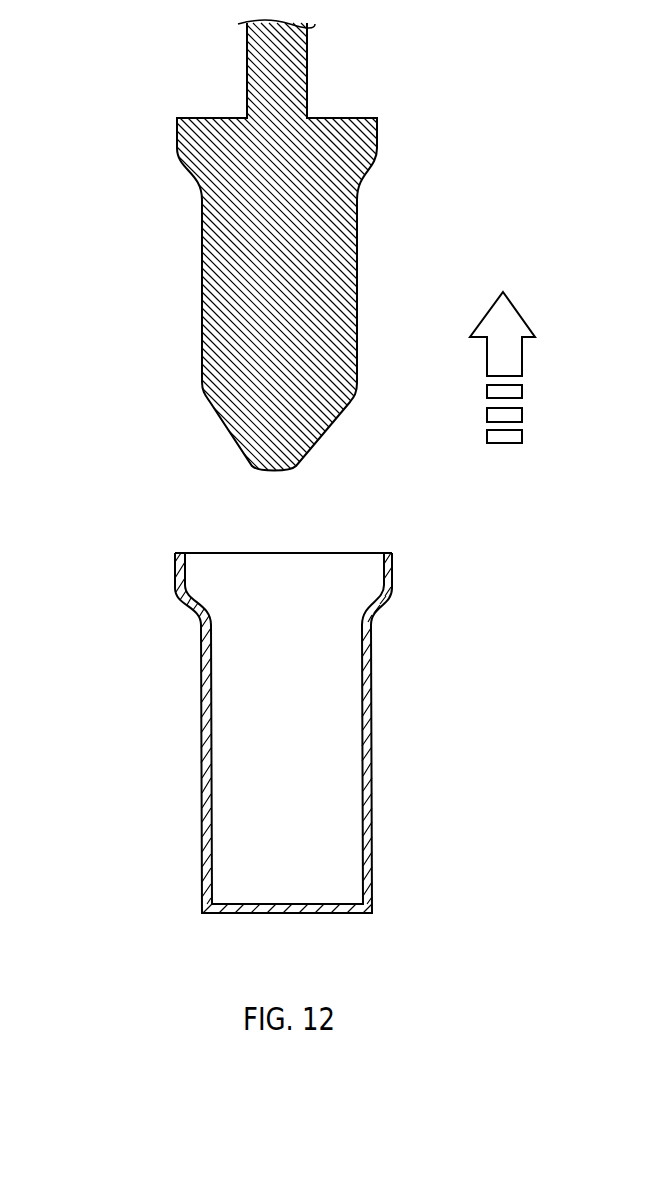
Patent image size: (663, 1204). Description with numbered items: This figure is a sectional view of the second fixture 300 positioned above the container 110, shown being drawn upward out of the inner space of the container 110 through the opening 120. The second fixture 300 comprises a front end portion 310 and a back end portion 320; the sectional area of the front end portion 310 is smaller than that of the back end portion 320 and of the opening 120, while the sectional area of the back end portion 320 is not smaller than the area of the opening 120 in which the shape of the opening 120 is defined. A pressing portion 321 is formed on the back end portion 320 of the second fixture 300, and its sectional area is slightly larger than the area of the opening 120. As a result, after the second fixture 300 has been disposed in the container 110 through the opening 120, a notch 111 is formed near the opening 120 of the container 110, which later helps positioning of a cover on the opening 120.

The second fixture 300 is at (323, 112).
The pressing portion 321 is at (193, 142).
The back end portion 320 is at (217, 270).
The front end portion 310 is at (238, 432).
The opening 120 is at (282, 553).
The notch 111 is at (383, 608).
The container 110 is at (373, 748).